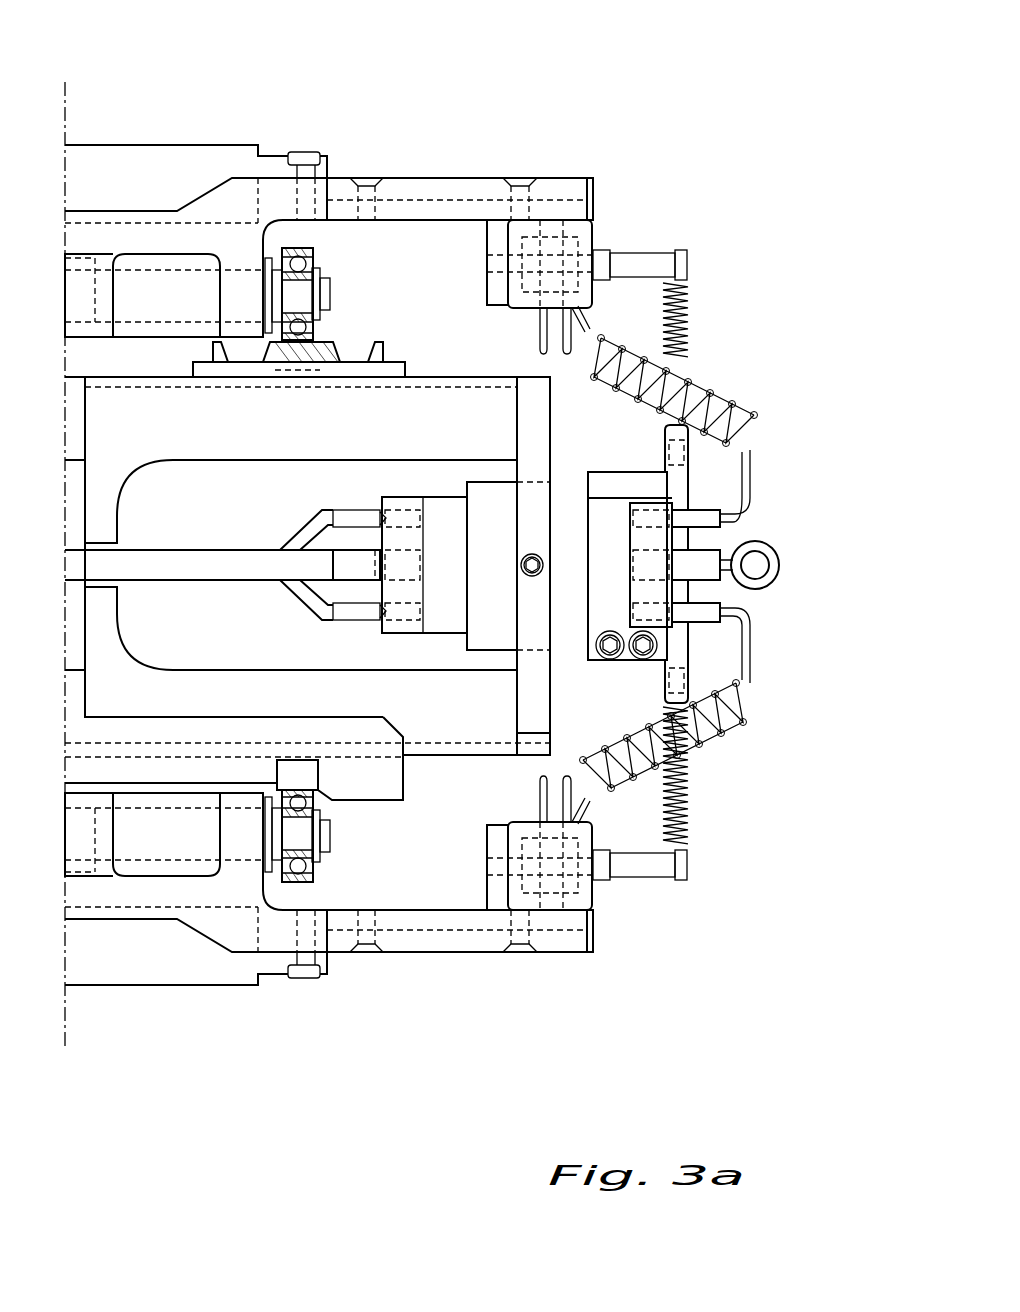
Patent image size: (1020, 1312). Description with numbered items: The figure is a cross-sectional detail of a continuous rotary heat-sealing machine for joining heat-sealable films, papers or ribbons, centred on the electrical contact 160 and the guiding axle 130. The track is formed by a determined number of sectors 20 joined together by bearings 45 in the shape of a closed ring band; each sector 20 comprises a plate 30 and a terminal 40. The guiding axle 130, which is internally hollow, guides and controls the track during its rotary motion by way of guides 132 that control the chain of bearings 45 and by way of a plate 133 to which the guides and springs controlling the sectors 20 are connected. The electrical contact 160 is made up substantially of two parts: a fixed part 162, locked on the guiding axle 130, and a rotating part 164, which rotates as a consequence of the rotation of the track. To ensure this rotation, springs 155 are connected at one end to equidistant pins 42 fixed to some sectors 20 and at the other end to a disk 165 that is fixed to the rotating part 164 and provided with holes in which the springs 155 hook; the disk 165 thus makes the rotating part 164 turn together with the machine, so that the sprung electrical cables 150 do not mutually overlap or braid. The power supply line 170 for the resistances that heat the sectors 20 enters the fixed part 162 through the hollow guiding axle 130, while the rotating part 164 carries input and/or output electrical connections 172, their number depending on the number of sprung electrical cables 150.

The sector 20 is at (160, 118).
The plate 30 is at (455, 210).
The terminal 40 is at (555, 245).
The pin 42 is at (687, 265).
The bearing 45 is at (303, 295).
The guiding axle 130 is at (122, 688).
The guide 132 is at (302, 355).
The plate 133 is at (368, 775).
The sprung electrical cable 150 is at (740, 400).
The spring 155 is at (690, 322).
The electrical contact 160 is at (795, 545).
The fixed part 162 is at (487, 540).
The rotating part 164 is at (605, 565).
The disk 165 is at (675, 658).
The power supply line 170 is at (213, 565).
The electrical connection 172 is at (703, 518).